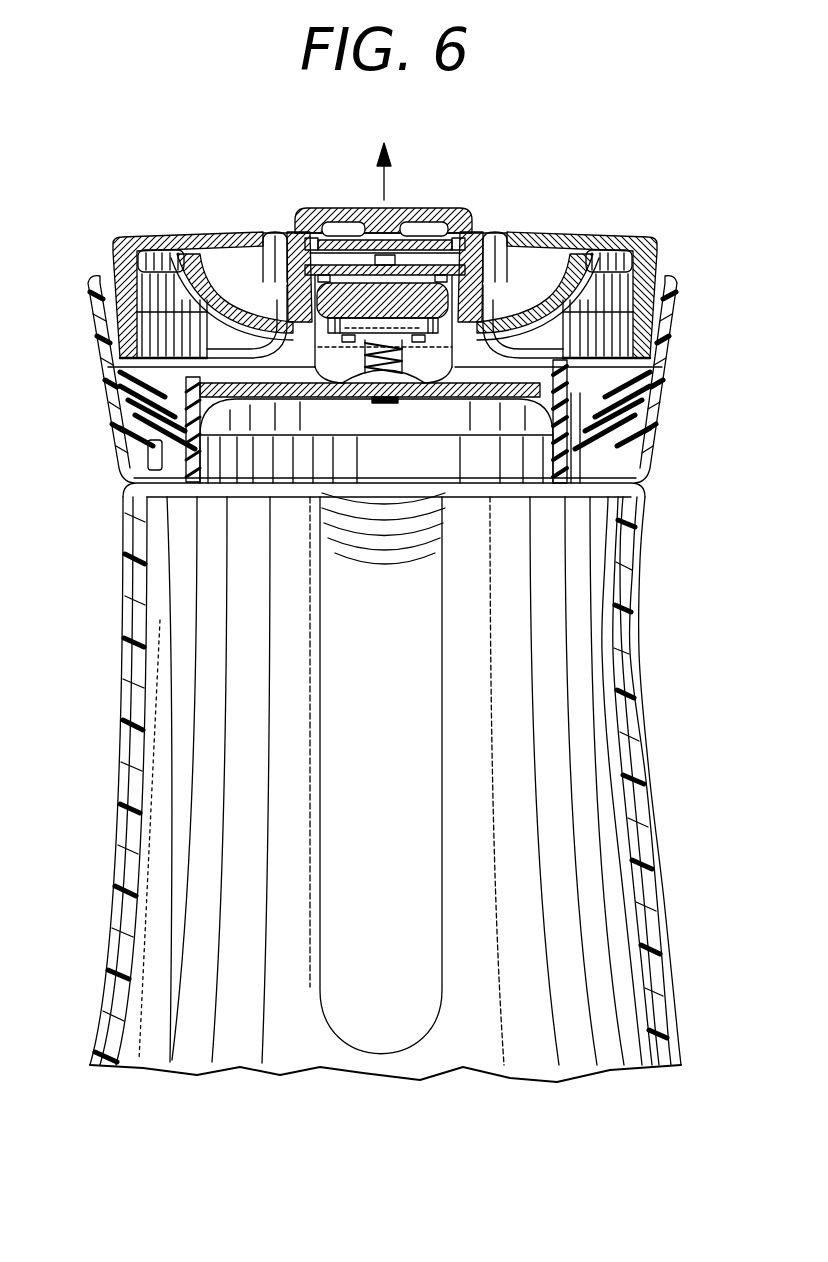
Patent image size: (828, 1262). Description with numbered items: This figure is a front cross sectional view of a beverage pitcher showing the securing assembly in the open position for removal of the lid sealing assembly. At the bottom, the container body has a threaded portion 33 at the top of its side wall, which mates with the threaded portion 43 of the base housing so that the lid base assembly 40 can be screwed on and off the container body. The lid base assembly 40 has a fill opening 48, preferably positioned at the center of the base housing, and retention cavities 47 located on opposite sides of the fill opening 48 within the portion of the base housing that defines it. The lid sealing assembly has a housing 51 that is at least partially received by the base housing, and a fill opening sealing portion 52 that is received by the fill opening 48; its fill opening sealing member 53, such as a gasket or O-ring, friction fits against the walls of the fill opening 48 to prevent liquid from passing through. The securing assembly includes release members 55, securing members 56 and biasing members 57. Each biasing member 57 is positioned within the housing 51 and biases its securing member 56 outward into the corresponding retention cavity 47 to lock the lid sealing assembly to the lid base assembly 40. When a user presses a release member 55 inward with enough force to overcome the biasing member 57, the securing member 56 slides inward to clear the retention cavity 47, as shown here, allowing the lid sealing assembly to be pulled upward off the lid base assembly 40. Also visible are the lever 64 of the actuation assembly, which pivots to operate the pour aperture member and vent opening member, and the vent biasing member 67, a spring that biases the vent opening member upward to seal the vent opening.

The threaded portion 33 is at (596, 462).
The lid base assembly 40 is at (108, 358).
The threaded portion 43 is at (627, 443).
The retention cavity 47 is at (160, 423).
The fill opening 48 is at (560, 470).
The housing 51 is at (123, 250).
The fill opening sealing portion 52 is at (273, 460).
The fill opening sealing member 53 is at (543, 410).
The release member 55 is at (275, 233).
The securing member 56 is at (207, 240).
The biasing member 57 is at (437, 228).
The lever 64 is at (350, 300).
The vent biasing member 67 is at (377, 367).